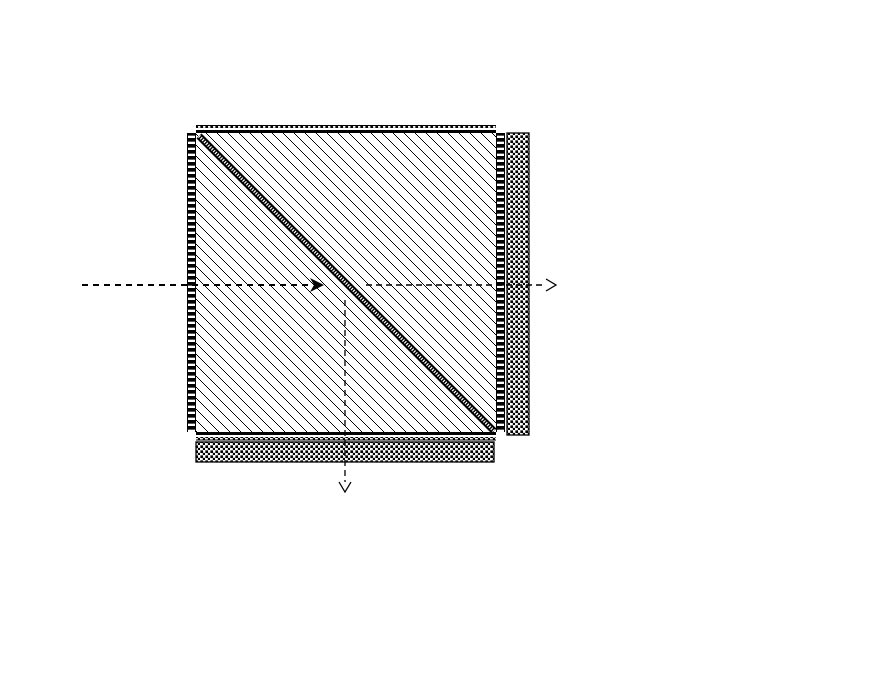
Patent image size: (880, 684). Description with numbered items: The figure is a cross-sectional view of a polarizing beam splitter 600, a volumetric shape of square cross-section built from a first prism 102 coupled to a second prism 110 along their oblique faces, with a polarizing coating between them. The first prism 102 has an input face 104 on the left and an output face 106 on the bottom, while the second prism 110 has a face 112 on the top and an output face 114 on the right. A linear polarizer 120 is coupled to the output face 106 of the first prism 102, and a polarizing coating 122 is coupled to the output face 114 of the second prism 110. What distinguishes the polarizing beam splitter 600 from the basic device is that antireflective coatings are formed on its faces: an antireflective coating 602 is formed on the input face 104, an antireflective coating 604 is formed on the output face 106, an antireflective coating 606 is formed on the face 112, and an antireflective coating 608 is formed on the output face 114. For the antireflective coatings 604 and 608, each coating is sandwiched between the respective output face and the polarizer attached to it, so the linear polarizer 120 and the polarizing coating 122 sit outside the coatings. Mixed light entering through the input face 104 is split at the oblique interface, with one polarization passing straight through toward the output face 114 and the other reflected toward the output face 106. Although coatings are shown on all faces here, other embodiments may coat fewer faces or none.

The polarizing beam splitter 600 is at (592, 41).
The first prism 102 is at (255, 406).
The second prism 110 is at (477, 180).
The input face 104 is at (200, 207).
The face 112 is at (277, 145).
The output face 114 is at (492, 262).
The output face 106 is at (209, 440).
The linear polarizer 120 is at (300, 458).
The polarizing coating 122 is at (522, 205).
The antireflective coating 602 is at (188, 375).
The antireflective coating 604 is at (461, 440).
The antireflective coating 606 is at (400, 132).
The antireflective coating 608 is at (500, 347).